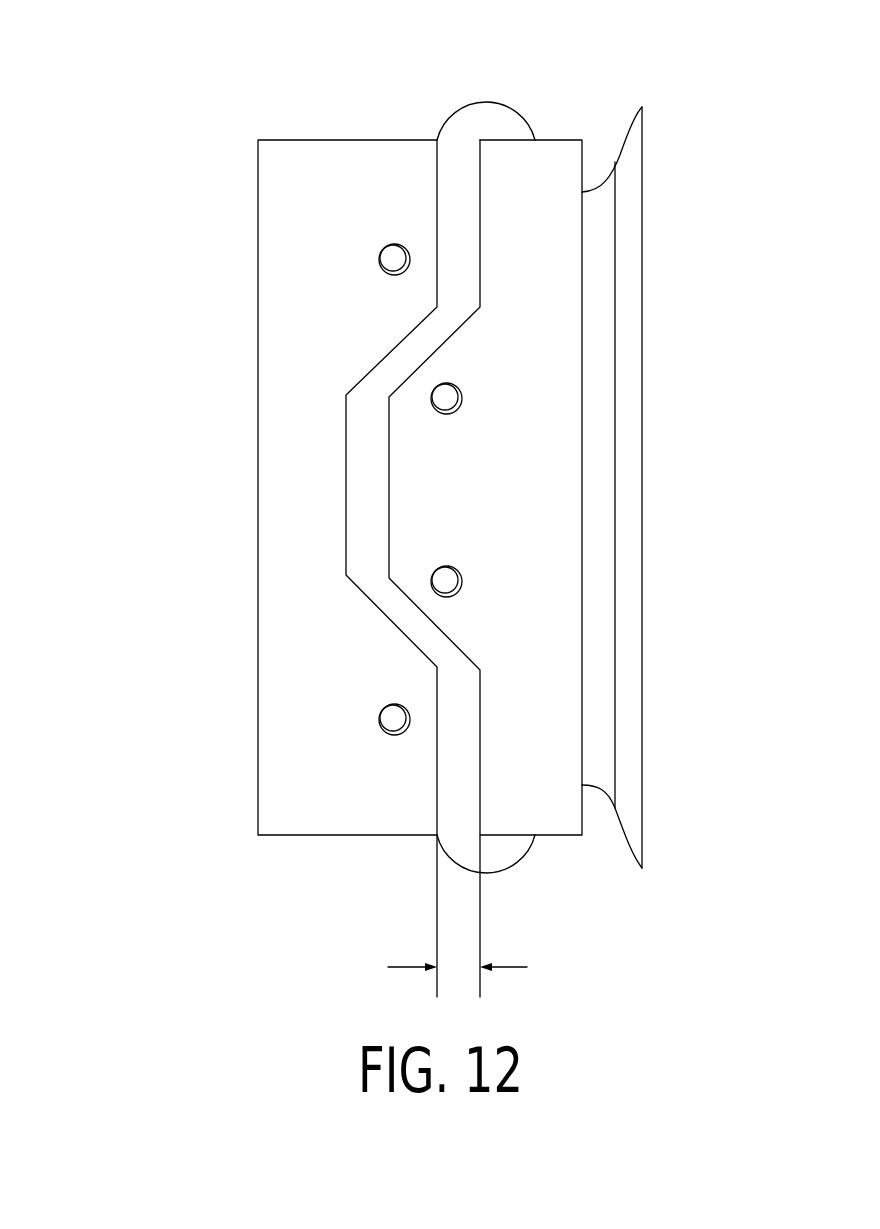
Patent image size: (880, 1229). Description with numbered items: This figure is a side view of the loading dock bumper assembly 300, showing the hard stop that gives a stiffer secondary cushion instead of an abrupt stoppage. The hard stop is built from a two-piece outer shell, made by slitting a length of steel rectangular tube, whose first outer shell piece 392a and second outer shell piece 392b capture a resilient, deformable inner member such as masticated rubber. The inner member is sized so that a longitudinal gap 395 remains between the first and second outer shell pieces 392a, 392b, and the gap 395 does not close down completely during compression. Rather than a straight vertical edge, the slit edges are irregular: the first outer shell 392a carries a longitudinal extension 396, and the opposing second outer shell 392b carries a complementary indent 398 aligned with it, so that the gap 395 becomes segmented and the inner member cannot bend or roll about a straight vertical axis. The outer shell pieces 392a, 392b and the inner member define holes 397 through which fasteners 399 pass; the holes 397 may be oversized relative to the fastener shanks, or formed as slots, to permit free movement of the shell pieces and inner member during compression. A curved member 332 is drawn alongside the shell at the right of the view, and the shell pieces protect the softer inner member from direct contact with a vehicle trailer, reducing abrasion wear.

The loading dock bumper assembly 300 is at (186, 87).
The support member 332 is at (632, 772).
The first outer shell piece 392a is at (556, 153).
The second outer shell piece 392b is at (313, 293).
The longitudinal gap 395 is at (505, 967).
The longitudinal extension 396 is at (413, 475).
The holes 397 is at (410, 257).
The indent 398 is at (327, 528).
The fasteners 399 is at (407, 262).